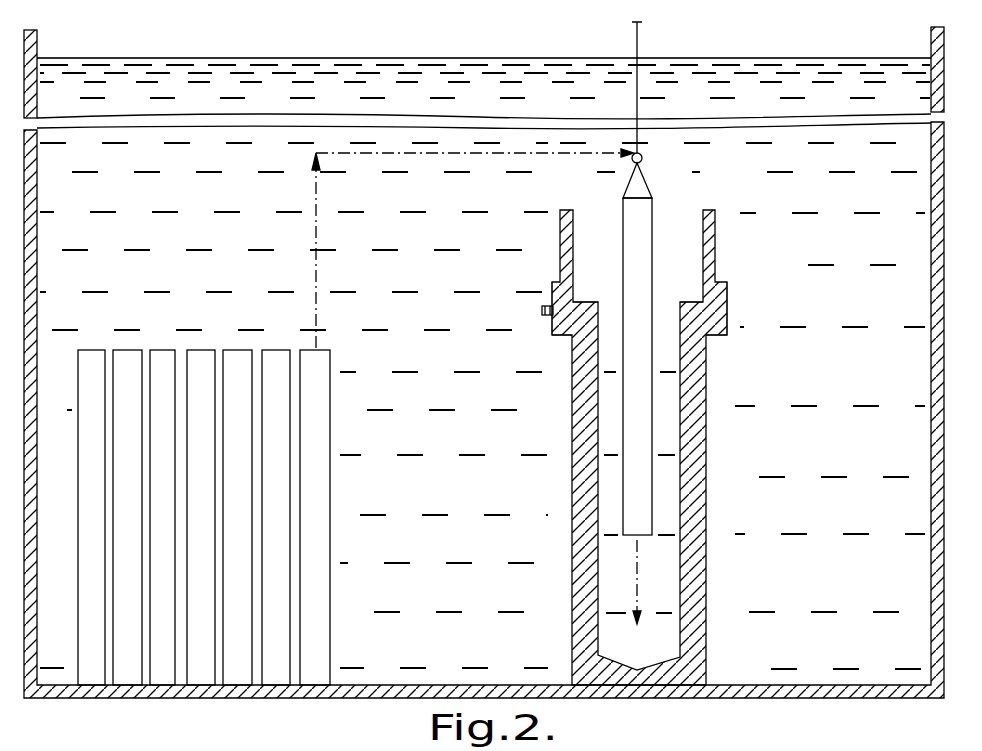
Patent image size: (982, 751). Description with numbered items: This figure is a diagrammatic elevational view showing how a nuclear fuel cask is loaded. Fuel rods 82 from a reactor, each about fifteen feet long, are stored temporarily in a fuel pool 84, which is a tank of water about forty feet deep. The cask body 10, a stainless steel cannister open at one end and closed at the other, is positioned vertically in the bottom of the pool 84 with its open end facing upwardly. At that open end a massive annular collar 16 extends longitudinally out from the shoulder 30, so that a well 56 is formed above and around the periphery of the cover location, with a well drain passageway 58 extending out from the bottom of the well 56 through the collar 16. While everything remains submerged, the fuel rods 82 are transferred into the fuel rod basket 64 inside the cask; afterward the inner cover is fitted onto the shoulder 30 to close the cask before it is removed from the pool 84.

The body 10 is at (639, 447).
The annular collar 16 is at (717, 323).
The shoulder 30 is at (588, 302).
The well 56 is at (482, 406).
The well drain passageway 58 is at (557, 301).
The fuel rod basket 64 is at (635, 208).
The fuel rods 82 is at (233, 350).
The fuel pool 84 is at (203, 20).